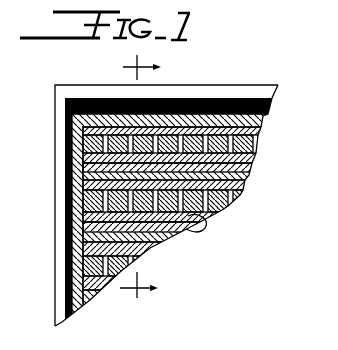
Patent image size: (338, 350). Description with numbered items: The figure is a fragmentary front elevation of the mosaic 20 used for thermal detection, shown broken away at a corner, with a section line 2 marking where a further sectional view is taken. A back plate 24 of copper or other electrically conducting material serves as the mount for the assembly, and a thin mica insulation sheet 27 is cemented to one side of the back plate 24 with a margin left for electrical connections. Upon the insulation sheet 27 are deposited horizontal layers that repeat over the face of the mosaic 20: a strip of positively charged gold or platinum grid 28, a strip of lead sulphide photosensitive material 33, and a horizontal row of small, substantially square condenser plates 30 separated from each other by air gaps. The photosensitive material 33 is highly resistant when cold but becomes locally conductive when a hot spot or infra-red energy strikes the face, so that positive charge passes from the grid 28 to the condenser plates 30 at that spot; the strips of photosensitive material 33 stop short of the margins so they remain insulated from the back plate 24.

The mosaic 20 is at (103, 77).
The back plate 24 is at (253, 88).
The insulation sheet 27 is at (268, 112).
The positively charged grid 28 is at (263, 123).
The photosensitive material 33 is at (260, 135).
The condenser plates 30 is at (215, 212).
The section line 2 is at (140, 176).